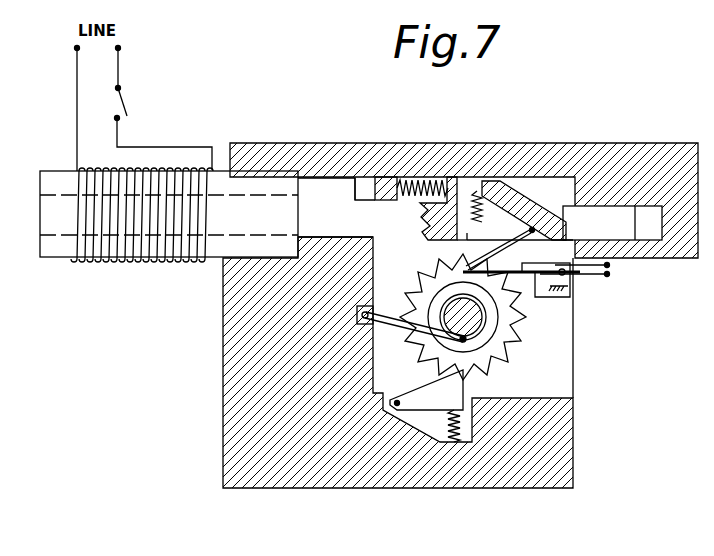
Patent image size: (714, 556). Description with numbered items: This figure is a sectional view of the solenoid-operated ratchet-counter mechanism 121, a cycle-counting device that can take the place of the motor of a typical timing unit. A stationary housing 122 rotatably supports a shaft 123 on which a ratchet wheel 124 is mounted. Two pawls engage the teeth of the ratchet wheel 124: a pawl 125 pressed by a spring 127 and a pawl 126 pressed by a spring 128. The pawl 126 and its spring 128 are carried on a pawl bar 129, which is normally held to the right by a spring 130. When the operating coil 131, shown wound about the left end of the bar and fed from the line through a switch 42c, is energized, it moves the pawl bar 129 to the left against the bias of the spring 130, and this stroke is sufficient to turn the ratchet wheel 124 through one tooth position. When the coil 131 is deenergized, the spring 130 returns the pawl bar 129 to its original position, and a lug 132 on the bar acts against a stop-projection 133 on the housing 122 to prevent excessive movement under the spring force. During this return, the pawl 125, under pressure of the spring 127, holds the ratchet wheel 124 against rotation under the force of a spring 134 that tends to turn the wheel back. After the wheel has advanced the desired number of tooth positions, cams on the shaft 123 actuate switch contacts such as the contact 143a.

The line switch 42c is at (123, 102).
The solenoid-operated ratchet-counter mechanism 121 is at (589, 118).
The stationary housing 122 is at (246, 383).
The shaft 123 is at (495, 318).
The ratchet wheel 124 is at (517, 335).
The pawl 125 is at (436, 394).
The pawl 126 is at (492, 250).
The spring 127 is at (452, 428).
The spring 128 is at (479, 216).
The pawl bar 129 is at (336, 207).
The spring 130 is at (409, 199).
The operating coil 131 is at (165, 262).
The lug 132 is at (362, 185).
The stop-projection 133 is at (395, 177).
The spring 134 is at (388, 308).
The switch contact 143a is at (572, 303).